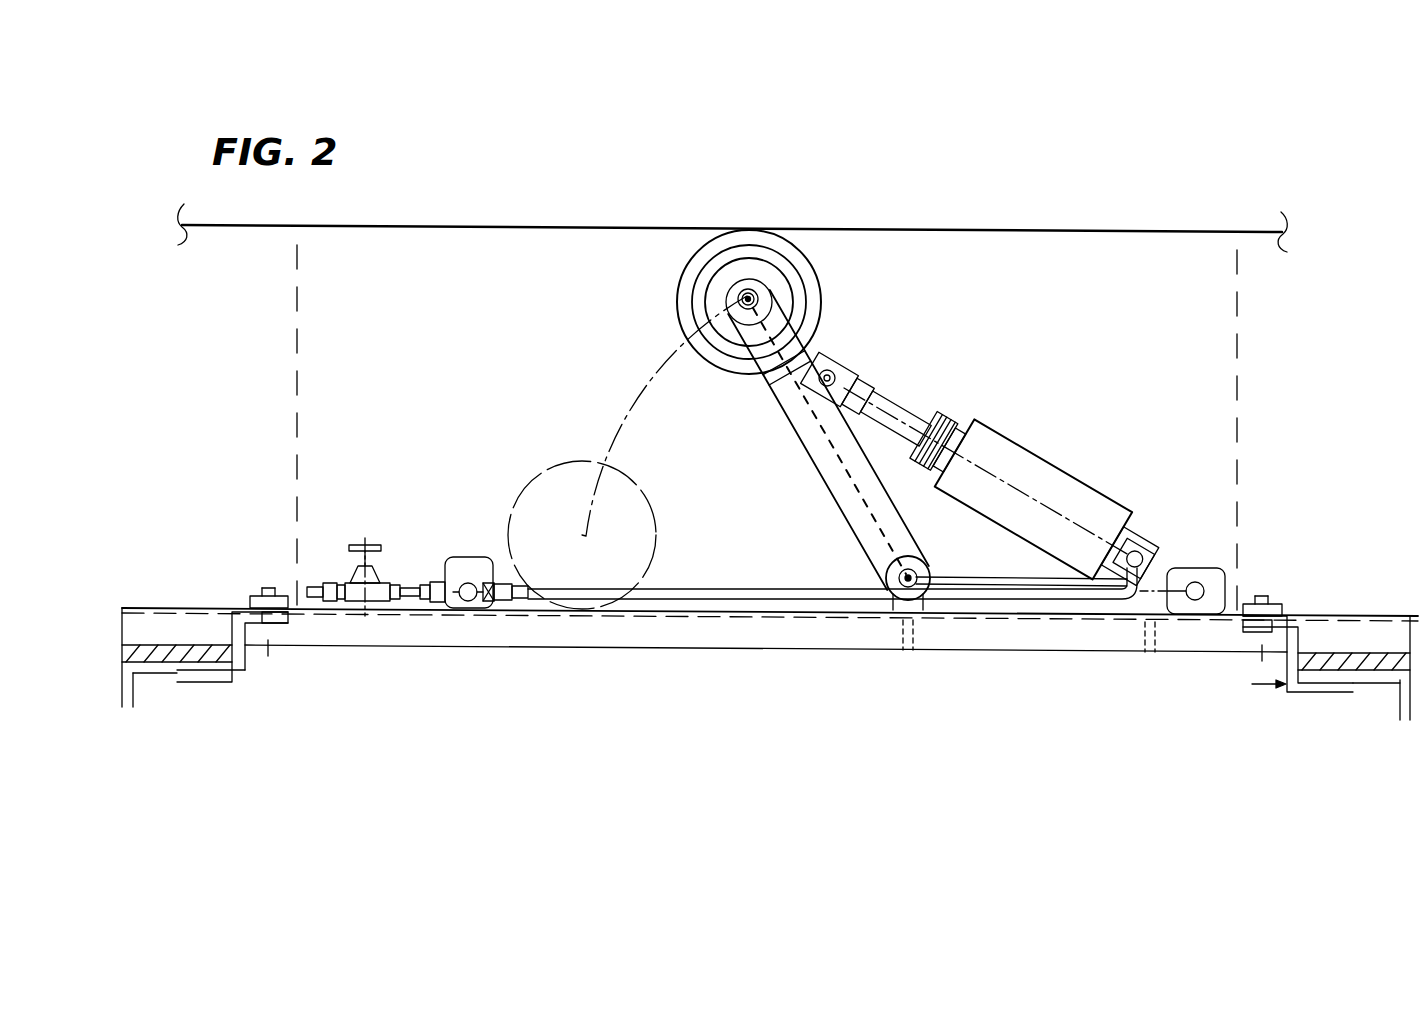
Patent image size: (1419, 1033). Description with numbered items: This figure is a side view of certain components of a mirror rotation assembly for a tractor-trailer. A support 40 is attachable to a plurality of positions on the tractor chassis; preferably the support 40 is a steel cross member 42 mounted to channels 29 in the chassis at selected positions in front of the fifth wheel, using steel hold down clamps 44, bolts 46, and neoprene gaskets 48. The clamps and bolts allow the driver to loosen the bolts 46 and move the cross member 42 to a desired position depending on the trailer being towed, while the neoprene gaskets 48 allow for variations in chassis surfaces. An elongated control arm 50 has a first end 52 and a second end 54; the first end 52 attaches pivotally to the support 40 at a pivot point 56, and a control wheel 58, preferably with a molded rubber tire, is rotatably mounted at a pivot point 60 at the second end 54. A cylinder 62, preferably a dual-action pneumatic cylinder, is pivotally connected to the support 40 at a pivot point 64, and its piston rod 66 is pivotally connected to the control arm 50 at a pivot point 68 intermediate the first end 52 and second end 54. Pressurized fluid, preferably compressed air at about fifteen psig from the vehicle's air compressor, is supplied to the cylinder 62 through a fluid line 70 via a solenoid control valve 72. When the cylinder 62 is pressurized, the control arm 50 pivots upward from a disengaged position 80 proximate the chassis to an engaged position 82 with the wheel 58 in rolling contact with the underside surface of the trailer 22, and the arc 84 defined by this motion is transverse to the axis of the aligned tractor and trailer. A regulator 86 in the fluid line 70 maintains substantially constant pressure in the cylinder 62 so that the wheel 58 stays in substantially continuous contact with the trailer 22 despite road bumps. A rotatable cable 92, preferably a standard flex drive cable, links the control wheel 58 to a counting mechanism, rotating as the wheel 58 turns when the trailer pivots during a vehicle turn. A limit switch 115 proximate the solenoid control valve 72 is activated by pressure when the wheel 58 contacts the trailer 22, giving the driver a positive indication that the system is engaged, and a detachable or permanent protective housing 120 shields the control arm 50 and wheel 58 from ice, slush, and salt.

The trailer 22 is at (905, 236).
The channels 29 is at (160, 664).
The support 40 is at (770, 658).
The cross member 42 is at (578, 633).
The hold down clamps 44 is at (238, 684).
The bolts 46 is at (268, 590).
The neoprene gaskets 48 is at (180, 673).
The control arm 50 is at (780, 416).
The first end 52 is at (858, 553).
The second end 54 is at (768, 363).
The pivot point 56 is at (895, 578).
The control wheel 58 is at (829, 290).
The pivot point 60 is at (738, 300).
The cylinder 62 is at (1012, 432).
The pivot point 64 is at (1140, 549).
The piston rod 66 is at (908, 422).
The pivot point 68 is at (836, 374).
The fluid line 70 is at (1199, 560).
The solenoid control valve 72 is at (481, 559).
The disengaged position 80 is at (517, 475).
The engaged position 82 is at (768, 302).
The arc 84 is at (615, 430).
The regulator 86 is at (353, 577).
The rotatable cable 92 is at (873, 510).
The limit switch 115 is at (492, 606).
The protective housing 120 is at (1239, 352).